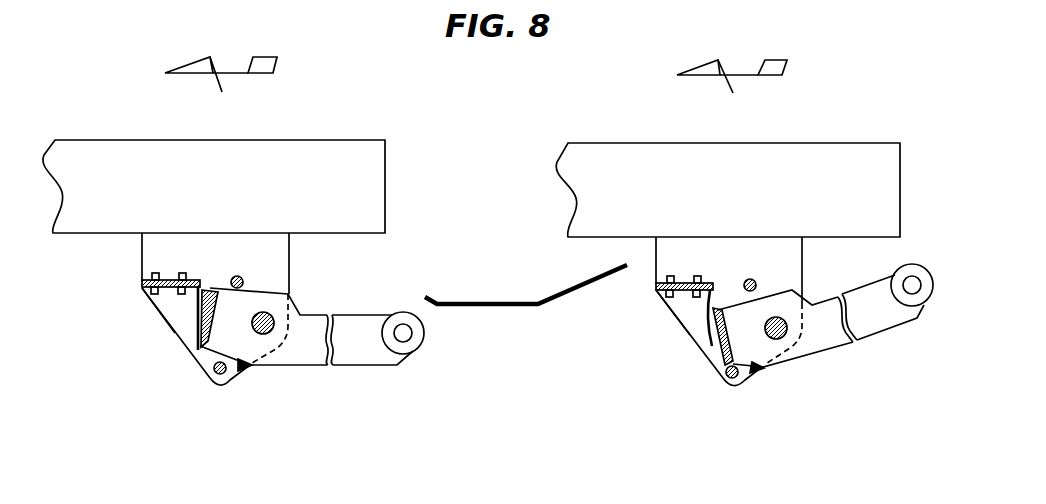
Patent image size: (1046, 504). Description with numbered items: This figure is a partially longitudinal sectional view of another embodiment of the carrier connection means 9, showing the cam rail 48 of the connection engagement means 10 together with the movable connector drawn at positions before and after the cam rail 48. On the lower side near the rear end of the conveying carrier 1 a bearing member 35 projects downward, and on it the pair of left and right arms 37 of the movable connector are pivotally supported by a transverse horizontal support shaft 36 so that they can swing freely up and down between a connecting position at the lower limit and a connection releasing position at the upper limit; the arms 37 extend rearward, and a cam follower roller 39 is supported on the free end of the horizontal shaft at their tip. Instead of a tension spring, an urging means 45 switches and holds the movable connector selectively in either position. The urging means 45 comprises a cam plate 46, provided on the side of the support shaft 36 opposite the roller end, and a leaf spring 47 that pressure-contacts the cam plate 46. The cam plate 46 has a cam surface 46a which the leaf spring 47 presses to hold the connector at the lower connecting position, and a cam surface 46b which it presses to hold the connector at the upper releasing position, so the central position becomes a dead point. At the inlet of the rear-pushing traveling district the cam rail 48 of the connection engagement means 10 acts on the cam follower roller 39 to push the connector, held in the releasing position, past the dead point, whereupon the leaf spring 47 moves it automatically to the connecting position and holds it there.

The conveying carrier 1 is at (80, 140).
The carrier connection means 9 is at (297, 369).
The connection engagement means 10 is at (526, 291).
The bearing member 35 is at (216, 256).
The support shaft 36 is at (270, 310).
The arms 37 is at (310, 325).
The cam follower roller 39 is at (424, 336).
The urging means 45 is at (187, 325).
The cam plate 46 is at (243, 372).
The cam surface 46a is at (199, 328).
The cam surface 46b is at (210, 288).
The leaf spring 47 is at (197, 312).
The cam rail 48 is at (517, 307).